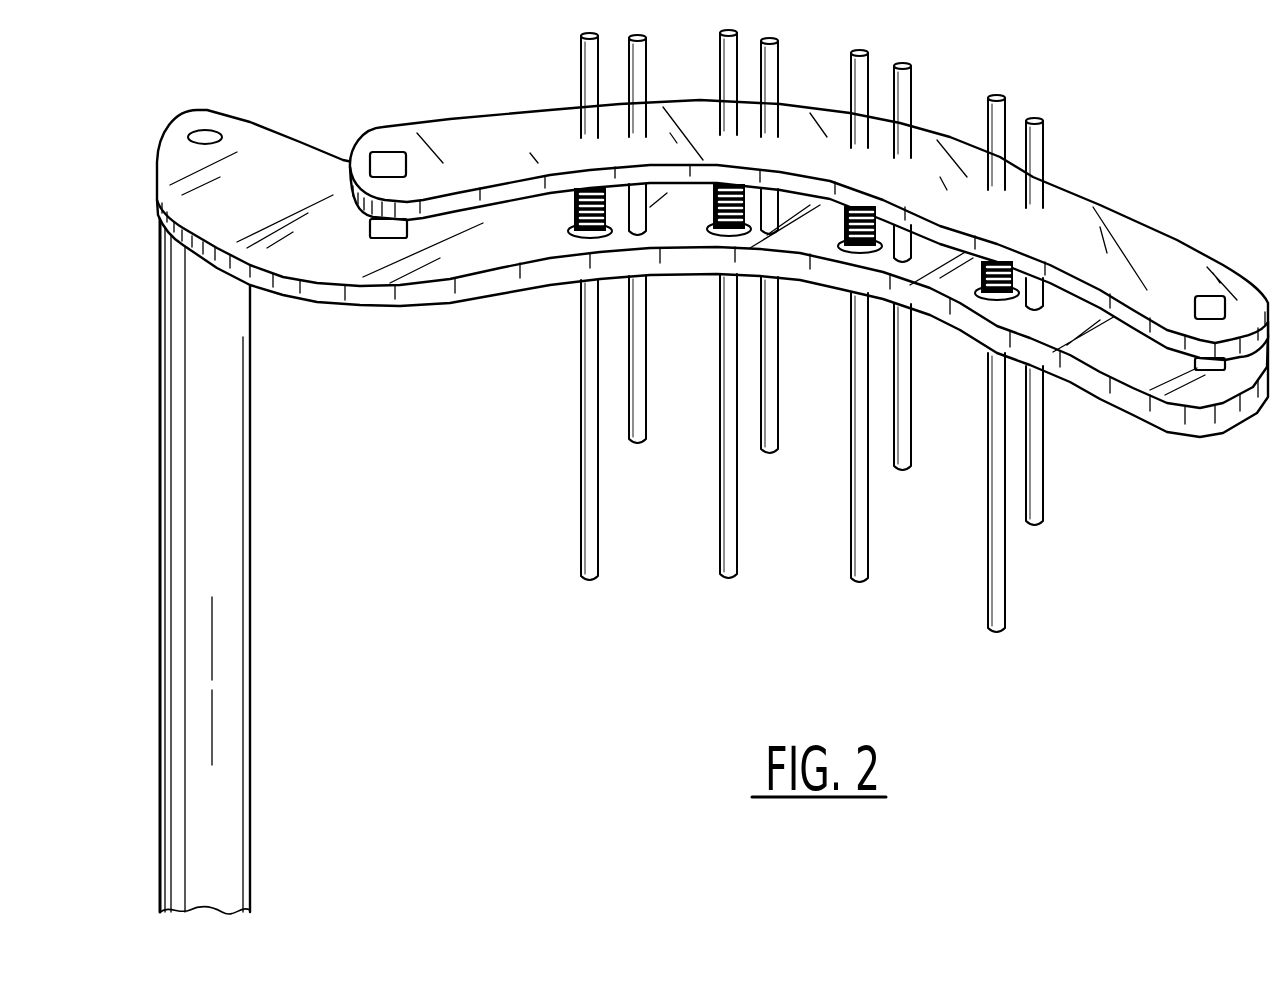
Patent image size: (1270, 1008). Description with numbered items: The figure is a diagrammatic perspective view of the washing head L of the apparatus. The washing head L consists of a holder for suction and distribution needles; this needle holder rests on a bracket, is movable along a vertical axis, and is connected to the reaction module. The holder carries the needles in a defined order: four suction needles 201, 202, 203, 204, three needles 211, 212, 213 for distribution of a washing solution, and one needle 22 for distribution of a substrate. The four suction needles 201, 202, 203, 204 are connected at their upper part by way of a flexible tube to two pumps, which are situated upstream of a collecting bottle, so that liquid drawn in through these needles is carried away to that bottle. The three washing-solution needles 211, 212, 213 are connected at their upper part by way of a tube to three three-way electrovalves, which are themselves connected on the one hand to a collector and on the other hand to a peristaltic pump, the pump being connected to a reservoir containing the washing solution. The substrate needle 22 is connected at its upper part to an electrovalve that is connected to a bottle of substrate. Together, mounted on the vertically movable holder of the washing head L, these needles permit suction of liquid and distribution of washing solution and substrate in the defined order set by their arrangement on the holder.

The washing head L is at (436, 112).
The suction needle 201 is at (590, 331).
The suction needle 202 is at (730, 329).
The suction needle 203 is at (861, 340).
The suction needle 204 is at (998, 387).
The needle for distribution of a washing solution 211 is at (644, 263).
The needle for distribution of a washing solution 212 is at (776, 267).
The needle for distribution of a washing solution 213 is at (909, 289).
The needle for distribution of a substrate 22 is at (1046, 340).